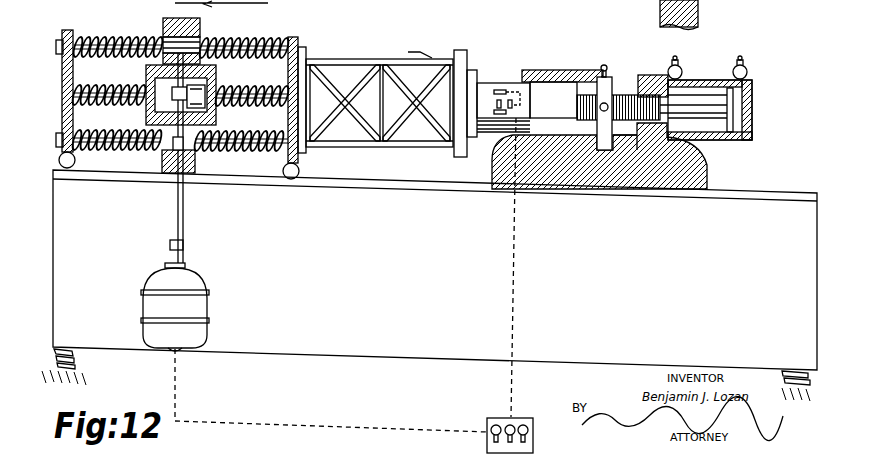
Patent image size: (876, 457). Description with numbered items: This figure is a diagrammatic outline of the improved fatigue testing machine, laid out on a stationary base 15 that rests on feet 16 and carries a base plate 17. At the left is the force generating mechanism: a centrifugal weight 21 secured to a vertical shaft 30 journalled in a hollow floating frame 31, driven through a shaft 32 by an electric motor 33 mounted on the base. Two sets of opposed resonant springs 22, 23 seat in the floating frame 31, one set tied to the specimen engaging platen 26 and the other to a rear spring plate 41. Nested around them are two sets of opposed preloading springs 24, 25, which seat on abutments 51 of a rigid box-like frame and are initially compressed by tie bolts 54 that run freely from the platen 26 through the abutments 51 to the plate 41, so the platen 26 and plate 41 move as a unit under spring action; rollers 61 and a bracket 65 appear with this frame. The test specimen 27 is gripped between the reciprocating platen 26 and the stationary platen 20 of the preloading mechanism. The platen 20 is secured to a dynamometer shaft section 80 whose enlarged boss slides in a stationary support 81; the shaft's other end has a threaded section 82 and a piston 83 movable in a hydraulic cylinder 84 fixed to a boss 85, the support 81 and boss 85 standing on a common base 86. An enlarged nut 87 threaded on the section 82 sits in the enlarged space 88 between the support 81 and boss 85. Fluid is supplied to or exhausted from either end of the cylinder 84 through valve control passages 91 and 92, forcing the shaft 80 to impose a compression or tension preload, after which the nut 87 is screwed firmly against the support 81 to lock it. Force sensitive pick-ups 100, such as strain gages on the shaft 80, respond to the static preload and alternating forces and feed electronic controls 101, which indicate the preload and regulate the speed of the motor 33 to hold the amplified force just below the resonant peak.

The stationary base 15 is at (652, 15).
The leveling foot 16 is at (74, 362).
The base plate 17 is at (384, 180).
The stationary platen 20 is at (462, 50).
The centrifugal weight 21 is at (200, 105).
The resonant springs 22 is at (263, 84).
The resonant springs 23 is at (121, 82).
The preloading springs 24 is at (259, 21).
The preloading springs 25 is at (98, 31).
The specimen engaging platen 26 is at (305, 26).
The specimen 27 is at (395, 58).
The vertical shaft 30 is at (172, 91).
The floating frame 31 is at (216, 78).
The shaft 32 is at (184, 220).
The electric motor 33 is at (195, 285).
The rear spring plate 41 is at (70, 29).
The abutments 51 is at (200, 26).
The tie bolts 54 is at (56, 46).
The roller 61 is at (75, 160).
The bracket 65 is at (314, 4).
The dynamometer shaft section 80 is at (507, 83).
The stationary support 81 is at (552, 70).
The threaded section 82 is at (610, 97).
The piston 83 is at (728, 141).
The hydraulic cylinder 84 is at (716, 80).
The boss 85 is at (676, 66).
The common base 86 is at (492, 168).
The enlarged nut 87 is at (610, 78).
The enlarged space 88 is at (642, 69).
The valve control passage 91 is at (686, 66).
The valve control passage 92 is at (747, 70).
The pick-ups 100 is at (516, 125).
The electronic controls 101 is at (527, 420).